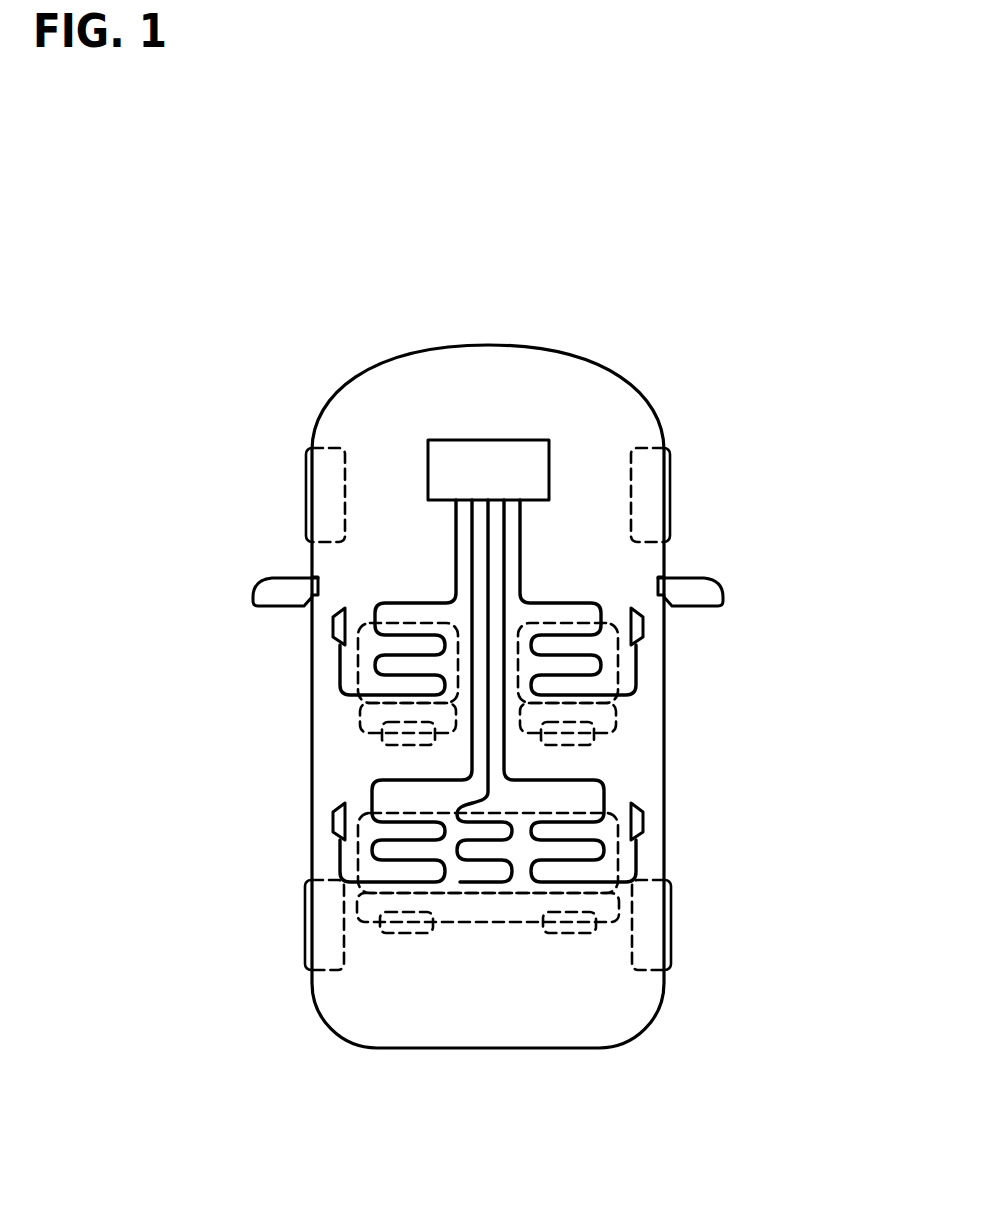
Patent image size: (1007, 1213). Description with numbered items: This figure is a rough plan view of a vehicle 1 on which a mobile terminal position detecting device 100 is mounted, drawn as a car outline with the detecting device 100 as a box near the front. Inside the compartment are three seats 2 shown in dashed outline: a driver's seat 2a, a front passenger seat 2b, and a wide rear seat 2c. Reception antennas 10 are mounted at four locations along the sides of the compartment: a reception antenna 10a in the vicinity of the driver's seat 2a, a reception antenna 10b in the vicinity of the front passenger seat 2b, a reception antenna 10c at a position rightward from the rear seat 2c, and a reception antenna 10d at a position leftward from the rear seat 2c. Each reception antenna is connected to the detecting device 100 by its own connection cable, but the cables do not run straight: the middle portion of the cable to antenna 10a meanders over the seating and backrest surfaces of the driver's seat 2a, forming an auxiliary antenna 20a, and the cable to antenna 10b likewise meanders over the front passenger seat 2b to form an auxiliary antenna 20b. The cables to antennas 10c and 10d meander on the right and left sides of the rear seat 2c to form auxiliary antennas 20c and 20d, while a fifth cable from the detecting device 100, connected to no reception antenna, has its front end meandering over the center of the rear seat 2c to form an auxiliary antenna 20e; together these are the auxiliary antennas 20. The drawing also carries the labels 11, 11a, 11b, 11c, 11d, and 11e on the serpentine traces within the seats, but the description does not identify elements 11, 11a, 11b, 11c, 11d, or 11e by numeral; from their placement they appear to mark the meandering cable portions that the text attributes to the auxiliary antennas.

The vehicle 1 is at (650, 407).
The mobile terminal position detecting device 100 is at (502, 440).
The seats 2 is at (487, 867).
The driver's seat 2a is at (616, 721).
The front passenger seat 2b is at (360, 721).
The rear seat 2c is at (520, 922).
The reception antennas 10 is at (489, 739).
The reception antenna 10a is at (643, 627).
The reception antenna 10b is at (333, 627).
The reception antenna 10c is at (643, 820).
The reception antenna 10d is at (333, 820).
The seat heater 11 is at (486, 766).
The seat heater 11a is at (569, 603).
The seat heater 11b is at (407, 603).
The seat heater 11c is at (569, 780).
The seat heater 11d is at (407, 780).
The seat heater 11e is at (497, 882).
The auxiliary antennas 20 is at (489, 908).
The auxiliary antenna 20a is at (598, 713).
The auxiliary antenna 20b is at (378, 713).
The auxiliary antenna 20c is at (600, 900).
The auxiliary antenna 20d is at (375, 900).
The auxiliary antenna 20e is at (471, 900).